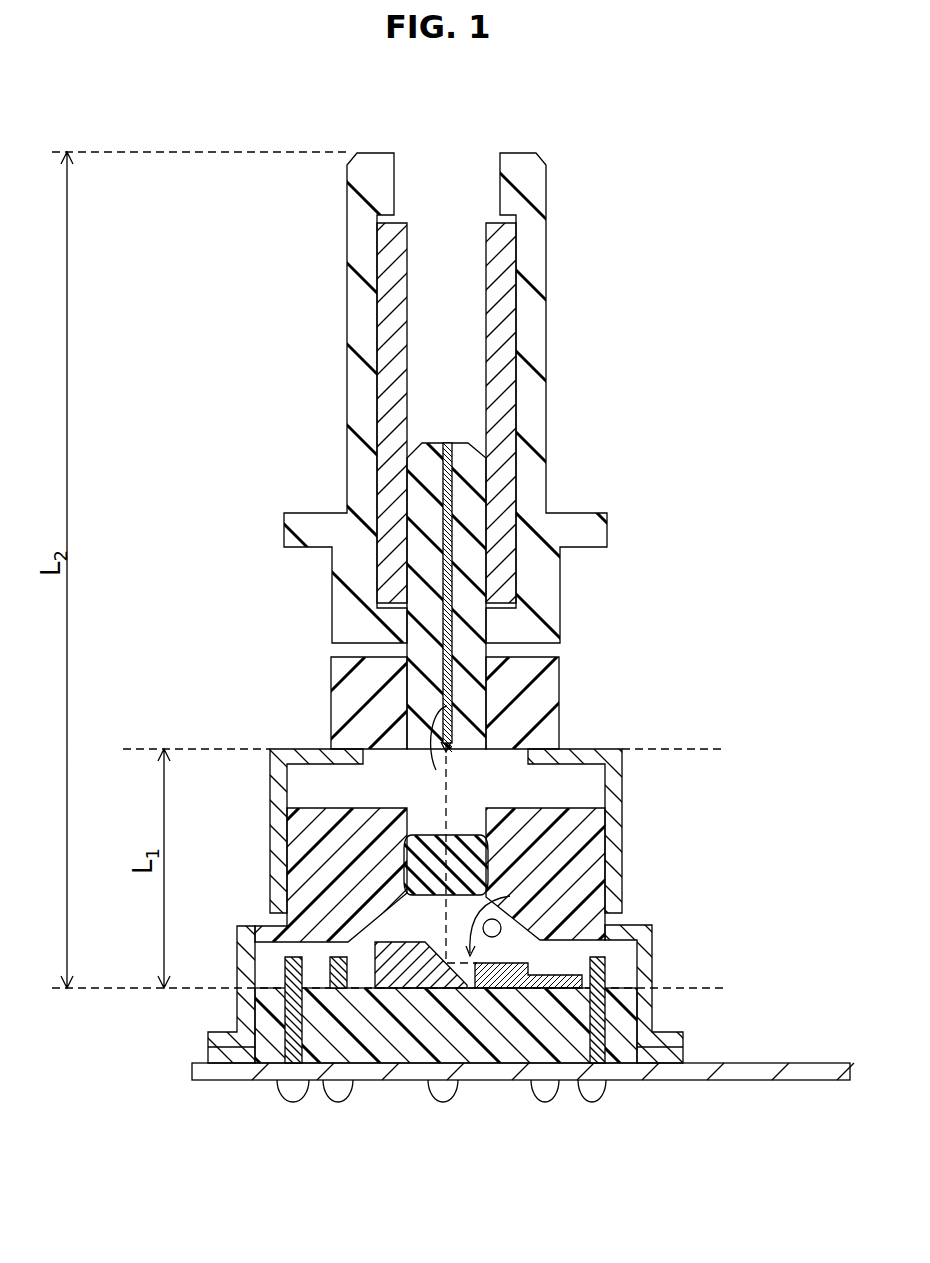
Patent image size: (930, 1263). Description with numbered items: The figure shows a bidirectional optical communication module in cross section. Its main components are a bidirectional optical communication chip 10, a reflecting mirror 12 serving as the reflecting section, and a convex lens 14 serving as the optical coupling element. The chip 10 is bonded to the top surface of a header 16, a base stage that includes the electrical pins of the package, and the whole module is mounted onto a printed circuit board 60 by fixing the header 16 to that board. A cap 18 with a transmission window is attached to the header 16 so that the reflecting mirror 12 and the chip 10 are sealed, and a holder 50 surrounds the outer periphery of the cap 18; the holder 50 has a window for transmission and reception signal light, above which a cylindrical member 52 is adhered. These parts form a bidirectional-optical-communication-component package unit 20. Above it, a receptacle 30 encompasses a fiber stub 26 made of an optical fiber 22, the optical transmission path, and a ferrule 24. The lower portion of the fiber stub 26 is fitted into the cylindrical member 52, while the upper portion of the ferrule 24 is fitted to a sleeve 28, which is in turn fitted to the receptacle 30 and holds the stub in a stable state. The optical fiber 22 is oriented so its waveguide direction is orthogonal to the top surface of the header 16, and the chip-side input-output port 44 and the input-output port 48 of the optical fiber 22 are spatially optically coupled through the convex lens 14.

The bidirectional optical communication chip 10 is at (492, 992).
The reflecting mirror 12 is at (405, 972).
The convex lens 14 is at (428, 870).
The header 16 is at (526, 1047).
The cap 18 is at (300, 827).
The bidirectional-optical-communication-component package unit 20 is at (723, 749).
The optical fiber 22 is at (455, 468).
The ferrule 24 is at (472, 497).
The fiber stub 26 is at (612, 423).
The sleeve 28 is at (492, 253).
The receptacle 30 is at (522, 336).
The input-output port 44 is at (493, 903).
The input-output port of the optical fiber 48 is at (448, 712).
The holder 50 is at (268, 782).
The cylindrical member 52 is at (342, 693).
The printed circuit board 60 is at (810, 1063).